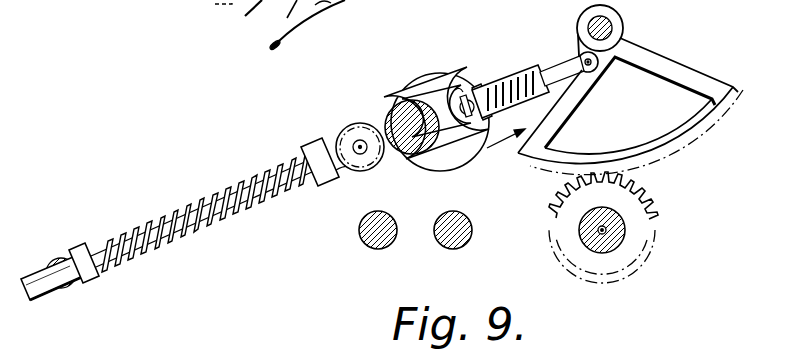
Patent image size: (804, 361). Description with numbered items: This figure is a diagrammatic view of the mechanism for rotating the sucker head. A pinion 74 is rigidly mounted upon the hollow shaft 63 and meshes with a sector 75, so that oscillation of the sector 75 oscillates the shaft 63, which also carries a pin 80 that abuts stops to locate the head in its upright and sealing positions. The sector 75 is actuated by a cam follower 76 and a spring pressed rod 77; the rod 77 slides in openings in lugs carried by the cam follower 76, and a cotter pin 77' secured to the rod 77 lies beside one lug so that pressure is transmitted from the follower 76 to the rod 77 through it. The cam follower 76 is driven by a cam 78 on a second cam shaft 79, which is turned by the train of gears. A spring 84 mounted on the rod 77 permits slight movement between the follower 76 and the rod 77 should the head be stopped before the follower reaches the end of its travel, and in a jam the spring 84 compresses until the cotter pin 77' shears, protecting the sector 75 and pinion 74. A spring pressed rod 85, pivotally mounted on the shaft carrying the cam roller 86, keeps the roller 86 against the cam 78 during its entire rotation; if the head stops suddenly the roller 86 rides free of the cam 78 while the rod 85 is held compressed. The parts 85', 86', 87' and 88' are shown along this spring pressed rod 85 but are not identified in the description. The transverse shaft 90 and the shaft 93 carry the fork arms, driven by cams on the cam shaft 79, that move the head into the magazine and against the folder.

The shaft 63 is at (617, 235).
The pinion 74 is at (630, 213).
The sector 75 is at (707, 122).
The cam follower 76 is at (463, 73).
The spring pressed rod 77 is at (517, 58).
The cotter pin 77' is at (499, 60).
The cam 78 is at (443, 72).
The second cam shaft 79 is at (397, 115).
The pin 80 is at (213, 4).
The spring 84 is at (508, 82).
The spring pressed rod 85 is at (201, 210).
The spring end 85' is at (125, 228).
The cam roller 86 is at (357, 126).
The collar 86' is at (311, 149).
The collar 87' is at (105, 273).
The pin 88' is at (52, 257).
The transverse shaft 90 is at (370, 247).
The shaft 93 is at (457, 245).